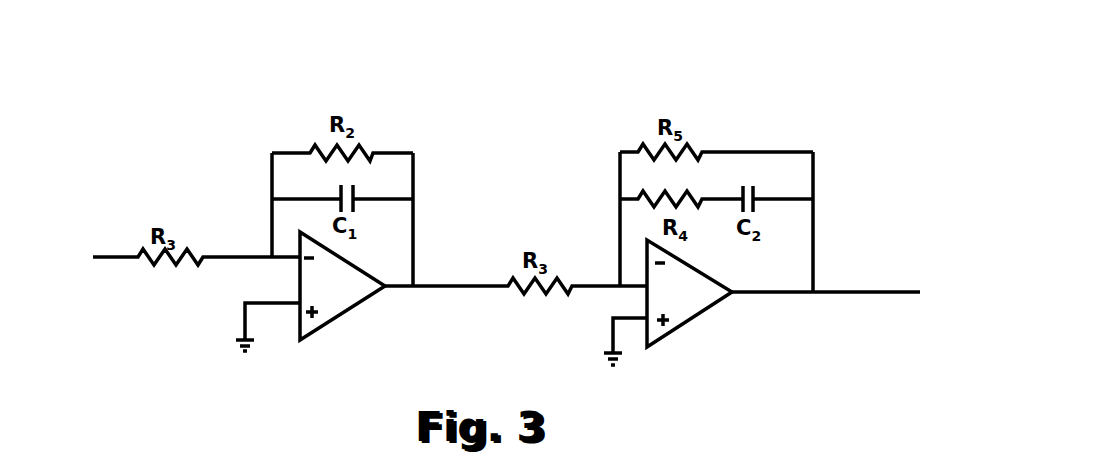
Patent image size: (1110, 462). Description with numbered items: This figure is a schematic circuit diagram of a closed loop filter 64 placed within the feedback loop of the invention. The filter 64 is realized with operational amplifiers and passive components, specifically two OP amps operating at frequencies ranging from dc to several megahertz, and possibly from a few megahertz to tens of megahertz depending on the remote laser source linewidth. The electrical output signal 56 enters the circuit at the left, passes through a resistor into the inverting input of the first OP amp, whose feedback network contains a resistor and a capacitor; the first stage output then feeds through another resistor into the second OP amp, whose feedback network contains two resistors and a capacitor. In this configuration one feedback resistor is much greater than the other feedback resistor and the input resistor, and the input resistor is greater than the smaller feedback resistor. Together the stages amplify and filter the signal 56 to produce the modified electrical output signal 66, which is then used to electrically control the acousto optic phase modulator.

The electrical output signal 56 is at (118, 257).
The filter 64 is at (748, 104).
The modified electrical output signal 66 is at (857, 292).